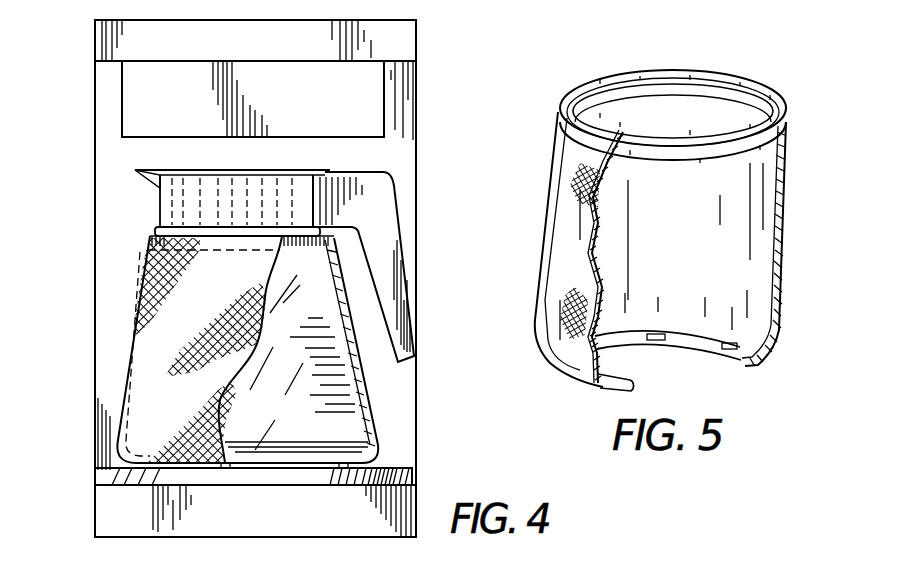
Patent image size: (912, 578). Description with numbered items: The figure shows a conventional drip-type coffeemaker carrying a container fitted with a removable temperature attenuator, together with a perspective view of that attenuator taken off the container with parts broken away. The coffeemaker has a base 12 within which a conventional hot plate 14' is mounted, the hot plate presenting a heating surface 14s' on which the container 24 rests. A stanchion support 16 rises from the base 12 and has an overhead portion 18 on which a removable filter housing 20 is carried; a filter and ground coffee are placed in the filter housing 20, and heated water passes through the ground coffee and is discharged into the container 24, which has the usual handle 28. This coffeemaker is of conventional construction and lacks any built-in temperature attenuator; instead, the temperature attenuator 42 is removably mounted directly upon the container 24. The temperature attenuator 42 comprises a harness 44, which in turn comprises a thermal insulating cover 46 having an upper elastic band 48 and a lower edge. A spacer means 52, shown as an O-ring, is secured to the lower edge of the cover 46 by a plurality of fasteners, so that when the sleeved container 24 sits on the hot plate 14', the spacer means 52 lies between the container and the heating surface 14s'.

In FIG. 4, the base 12 is at (265, 513).
In FIG. 4, the hot plate 14' is at (253, 521).
In FIG. 4, the heating surface 14s' is at (402, 471).
In FIG. 4, the stanchion support 16 is at (380, 152).
In FIG. 4, the overhead portion 18 is at (395, 38).
In FIG. 4, the filter housing 20 is at (175, 97).
In FIG. 4, the container 24 is at (312, 398).
In FIG. 4, the handle 28 is at (388, 255).
In FIG. 4, the temperature attenuator 42 is at (128, 302).
In FIG. 5, the temperature attenuator 42 is at (548, 158).
In FIG. 4, the harness 44 is at (164, 337).
In FIG. 5, the harness 44 is at (789, 220).
In FIG. 4, the thermal insulating cover 46 is at (172, 397).
In FIG. 5, the thermal insulating cover 46 is at (548, 223).
In FIG. 4, the upper elastic band 48 is at (286, 245).
In FIG. 5, the upper elastic band 48 is at (733, 98).
In FIG. 4, the spacer means 52 is at (322, 470).
In FIG. 5, the spacer means 52 is at (685, 344).